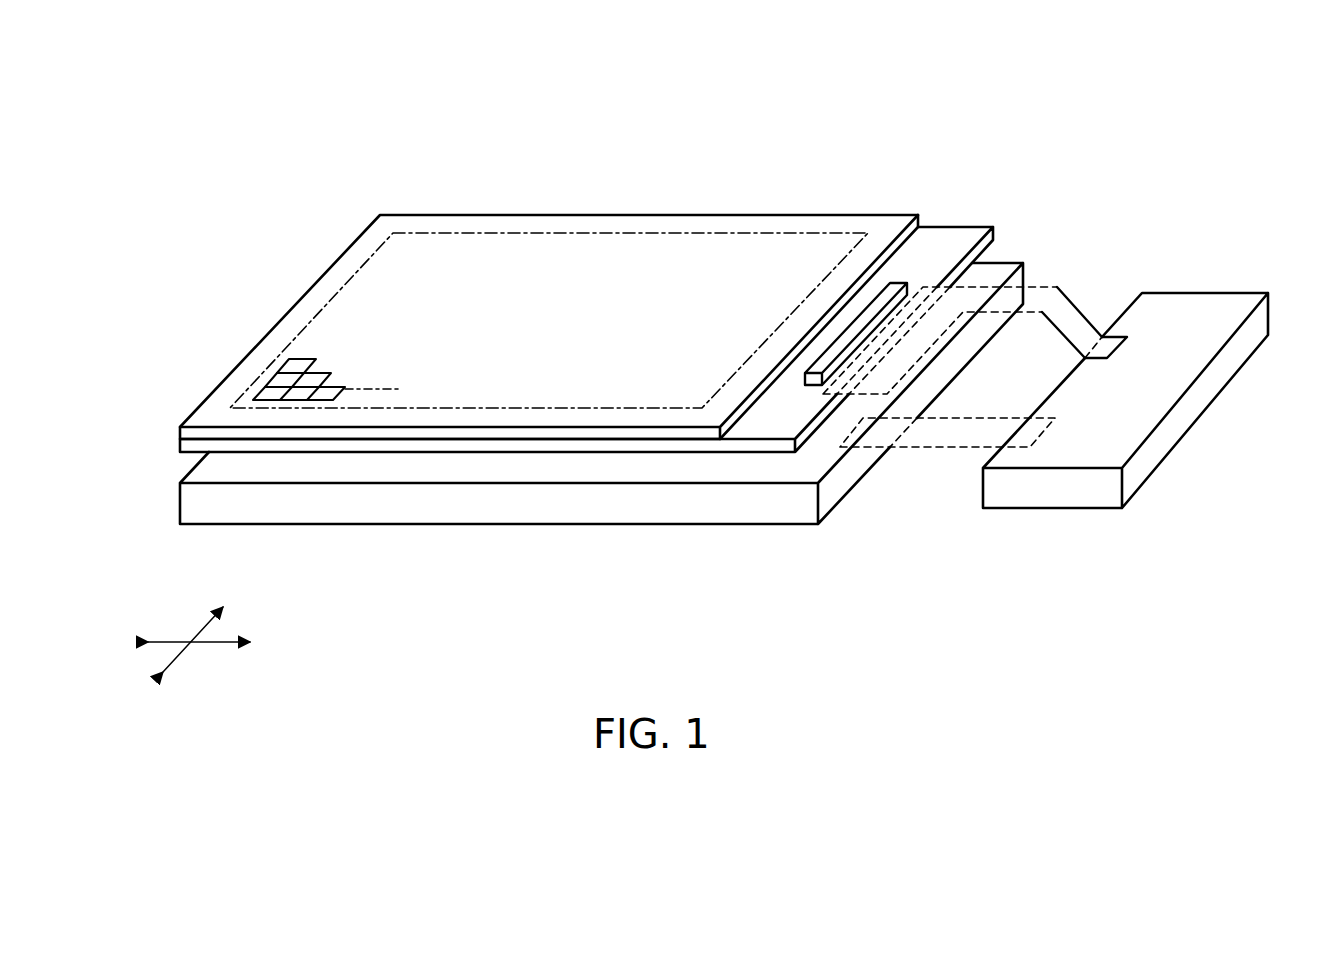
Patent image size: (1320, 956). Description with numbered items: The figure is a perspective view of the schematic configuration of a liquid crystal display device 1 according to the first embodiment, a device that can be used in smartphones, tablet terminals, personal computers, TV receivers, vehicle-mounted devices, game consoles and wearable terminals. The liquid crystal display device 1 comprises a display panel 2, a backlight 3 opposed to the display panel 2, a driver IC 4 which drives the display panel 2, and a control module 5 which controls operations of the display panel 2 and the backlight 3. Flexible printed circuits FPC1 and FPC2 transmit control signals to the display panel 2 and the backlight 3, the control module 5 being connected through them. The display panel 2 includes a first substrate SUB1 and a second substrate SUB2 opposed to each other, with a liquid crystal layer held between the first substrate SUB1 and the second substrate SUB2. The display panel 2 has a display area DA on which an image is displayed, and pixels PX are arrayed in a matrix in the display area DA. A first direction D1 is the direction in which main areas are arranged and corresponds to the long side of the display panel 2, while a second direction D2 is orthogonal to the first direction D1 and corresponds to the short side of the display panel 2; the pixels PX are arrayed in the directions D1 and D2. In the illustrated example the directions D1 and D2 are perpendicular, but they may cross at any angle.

The liquid crystal display device 1 is at (316, 206).
The display panel 2 is at (178, 433).
The backlight 3 is at (598, 510).
The driver IC 4 is at (806, 387).
The control module 5 is at (1240, 302).
The display area DA is at (688, 242).
The pixels PX is at (262, 393).
The first substrate SUB1 is at (955, 227).
The second substrate SUB2 is at (826, 214).
The flexible printed circuit FPC1 is at (1067, 296).
The flexible printed circuit FPC2 is at (939, 433).
The first direction D1 is at (222, 644).
The second direction D2 is at (208, 624).